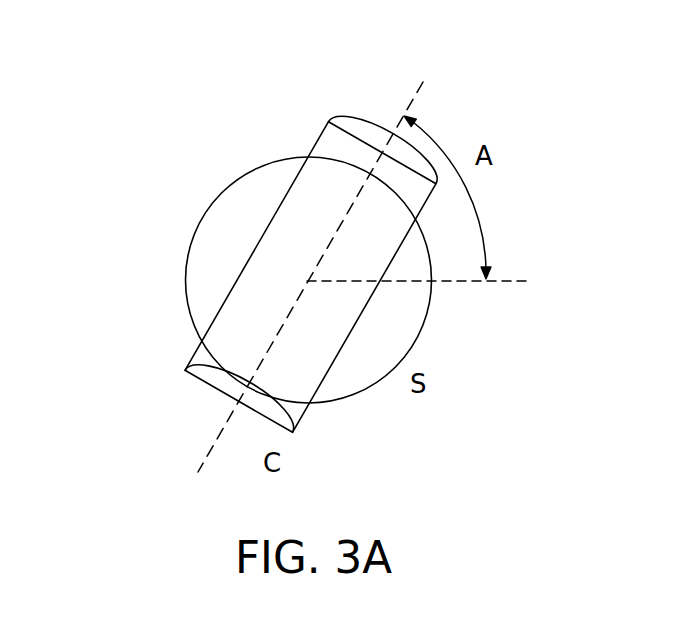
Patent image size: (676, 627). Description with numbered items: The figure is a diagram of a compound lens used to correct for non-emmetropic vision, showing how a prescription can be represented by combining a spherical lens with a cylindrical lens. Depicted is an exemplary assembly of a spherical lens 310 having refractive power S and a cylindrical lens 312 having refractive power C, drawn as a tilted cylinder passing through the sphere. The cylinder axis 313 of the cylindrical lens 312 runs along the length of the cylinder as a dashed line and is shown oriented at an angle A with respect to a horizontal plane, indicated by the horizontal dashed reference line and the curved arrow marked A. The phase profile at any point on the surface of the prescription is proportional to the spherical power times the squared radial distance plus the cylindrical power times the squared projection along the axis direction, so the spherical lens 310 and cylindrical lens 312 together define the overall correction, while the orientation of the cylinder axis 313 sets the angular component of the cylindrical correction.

The spherical lens 310 is at (193, 237).
The cylindrical lens 312 is at (187, 343).
The cylinder axis 313 is at (410, 111).